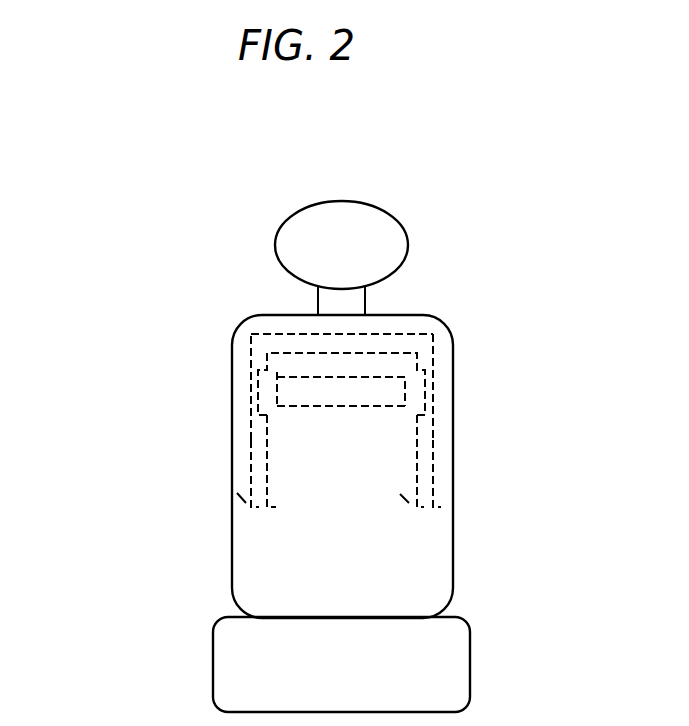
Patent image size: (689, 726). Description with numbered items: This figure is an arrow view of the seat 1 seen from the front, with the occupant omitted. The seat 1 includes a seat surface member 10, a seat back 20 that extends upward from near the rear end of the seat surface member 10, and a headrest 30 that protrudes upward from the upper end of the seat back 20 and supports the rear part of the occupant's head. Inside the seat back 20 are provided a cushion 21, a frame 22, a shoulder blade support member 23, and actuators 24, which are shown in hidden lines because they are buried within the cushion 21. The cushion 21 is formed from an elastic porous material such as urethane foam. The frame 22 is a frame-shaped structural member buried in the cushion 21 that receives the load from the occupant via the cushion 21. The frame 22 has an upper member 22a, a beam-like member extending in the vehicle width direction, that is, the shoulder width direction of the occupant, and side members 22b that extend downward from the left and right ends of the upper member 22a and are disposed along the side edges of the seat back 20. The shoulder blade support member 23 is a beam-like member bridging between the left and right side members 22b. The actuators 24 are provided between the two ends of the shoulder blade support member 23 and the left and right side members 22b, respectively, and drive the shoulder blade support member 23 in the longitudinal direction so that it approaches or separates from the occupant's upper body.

The seat 1 is at (202, 192).
The seat surface member 10 is at (214, 670).
The seat back 20 is at (232, 359).
The cushion 21 is at (325, 515).
The frame 22 is at (241, 442).
The upper member 22a is at (262, 334).
The side members 22b is at (417, 472).
The shoulder blade support member 23 is at (356, 405).
The actuators 24 is at (425, 375).
The headrest 30 is at (320, 206).